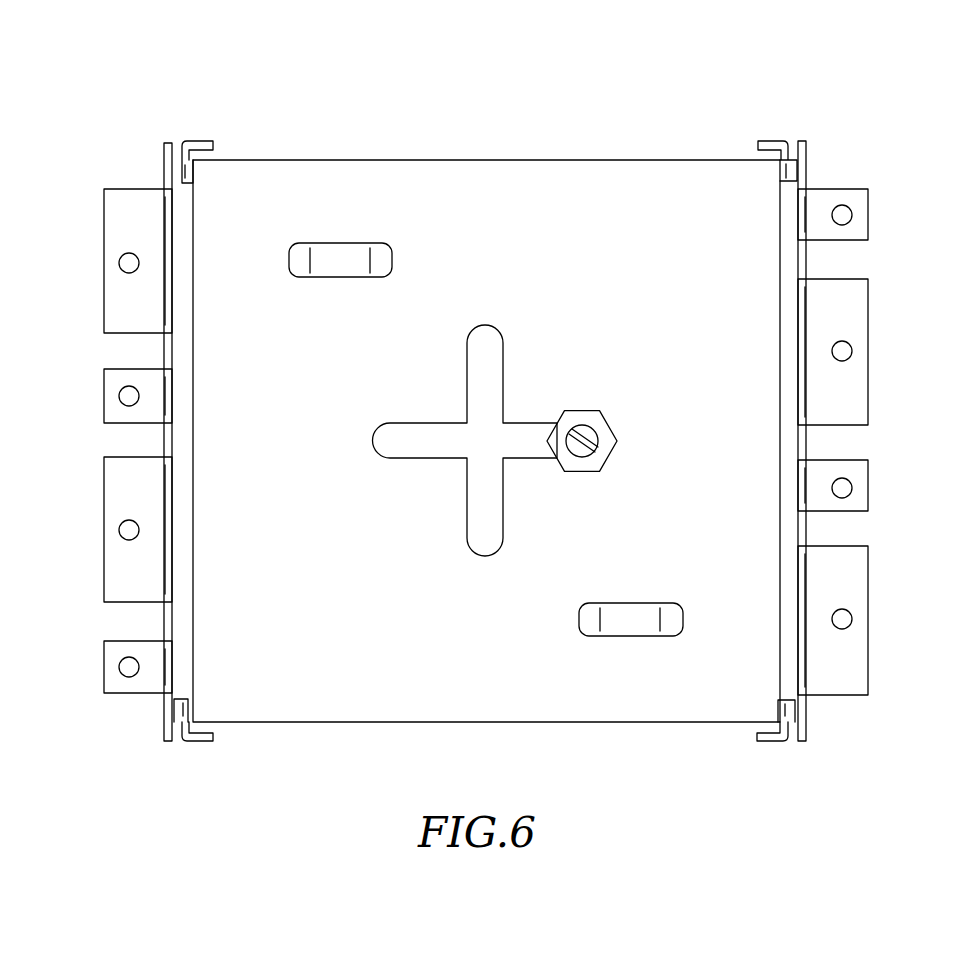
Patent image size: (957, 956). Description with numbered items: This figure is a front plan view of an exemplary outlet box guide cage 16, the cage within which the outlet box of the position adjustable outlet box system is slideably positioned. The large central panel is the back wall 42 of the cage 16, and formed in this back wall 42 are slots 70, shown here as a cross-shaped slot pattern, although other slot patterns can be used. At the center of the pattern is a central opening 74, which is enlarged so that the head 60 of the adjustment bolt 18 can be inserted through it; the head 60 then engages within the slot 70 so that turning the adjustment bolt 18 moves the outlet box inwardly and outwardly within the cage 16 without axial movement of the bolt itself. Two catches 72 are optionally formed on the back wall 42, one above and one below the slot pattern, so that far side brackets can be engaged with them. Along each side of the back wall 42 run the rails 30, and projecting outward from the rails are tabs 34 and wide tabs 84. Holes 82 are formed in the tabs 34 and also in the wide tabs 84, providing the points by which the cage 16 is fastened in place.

The outlet box cage 16 is at (486, 380).
The adjustment bolt 18 is at (587, 457).
The rails 30 is at (197, 145).
The tabs 34 is at (110, 382).
The back wall 42 is at (643, 187).
The head 60 is at (608, 427).
The slot 70 is at (447, 439).
The catches 72 is at (341, 258).
The central opening 74 is at (483, 437).
The holes 82 is at (128, 265).
The wide tabs 84 is at (108, 218).